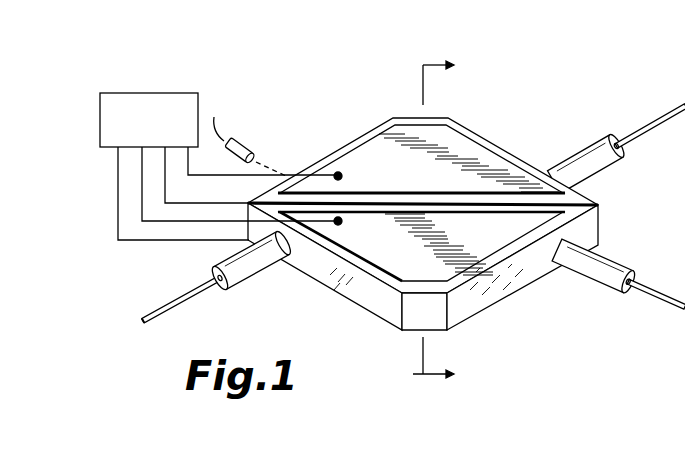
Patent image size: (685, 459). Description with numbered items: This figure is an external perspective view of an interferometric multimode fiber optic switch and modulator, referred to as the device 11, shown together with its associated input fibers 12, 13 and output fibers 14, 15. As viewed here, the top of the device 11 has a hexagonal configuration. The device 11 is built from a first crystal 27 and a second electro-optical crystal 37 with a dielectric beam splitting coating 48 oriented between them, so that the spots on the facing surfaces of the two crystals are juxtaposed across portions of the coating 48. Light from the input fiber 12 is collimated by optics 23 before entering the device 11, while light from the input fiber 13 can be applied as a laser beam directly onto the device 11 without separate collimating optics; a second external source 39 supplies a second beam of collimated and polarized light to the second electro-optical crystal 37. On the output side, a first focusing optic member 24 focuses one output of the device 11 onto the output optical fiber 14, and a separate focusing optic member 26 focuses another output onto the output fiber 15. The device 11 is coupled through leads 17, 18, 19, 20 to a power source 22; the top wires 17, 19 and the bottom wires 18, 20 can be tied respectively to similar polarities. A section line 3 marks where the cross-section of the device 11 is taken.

The section line 3 is at (427, 221).
The interferometric multimode fiber optic switch and modulator 11 is at (501, 136).
The input fiber 12 is at (168, 310).
The input fiber 13 is at (214, 117).
The output optical fiber 14 is at (678, 308).
The output fiber 15 is at (632, 136).
The lead 17 is at (213, 176).
The lead 18 is at (187, 203).
The lead 19 is at (170, 222).
The lead 20 is at (152, 241).
The power source 22 is at (146, 92).
The collimating optics 23 is at (242, 278).
The first focusing optic member 24 is at (613, 262).
The focusing optic member 26 is at (577, 160).
The first crystal 27 is at (464, 303).
The second electro-optical crystal 37 is at (334, 162).
The second external source 39 is at (236, 142).
The dielectric beam splitting coating 48 is at (599, 207).